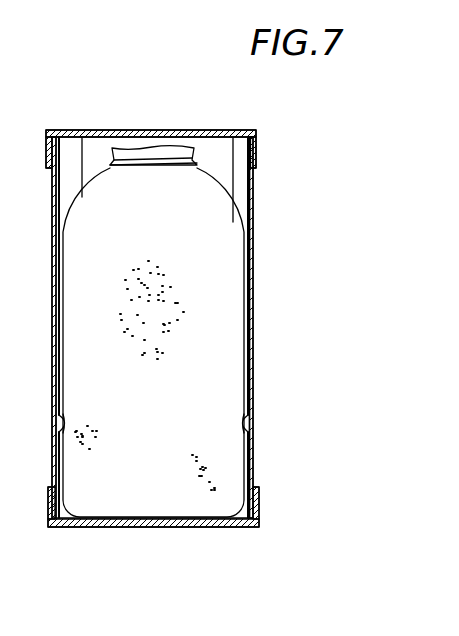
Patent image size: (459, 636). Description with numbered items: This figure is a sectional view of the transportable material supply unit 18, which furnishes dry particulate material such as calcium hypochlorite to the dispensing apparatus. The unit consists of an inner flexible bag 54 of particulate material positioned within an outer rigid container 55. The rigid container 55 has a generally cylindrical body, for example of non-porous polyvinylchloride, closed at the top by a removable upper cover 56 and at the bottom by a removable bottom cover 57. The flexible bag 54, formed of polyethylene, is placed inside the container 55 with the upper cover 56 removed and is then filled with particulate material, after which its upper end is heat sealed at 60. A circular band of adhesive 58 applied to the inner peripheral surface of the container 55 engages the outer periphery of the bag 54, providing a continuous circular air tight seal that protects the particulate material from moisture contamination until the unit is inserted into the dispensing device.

The material supply unit 18 is at (253, 230).
The flexible bag 54 is at (213, 305).
The rigid container 55 is at (248, 357).
The upper cover 56 is at (207, 130).
The bottom cover 57 is at (192, 528).
The circular band of adhesive 58 is at (250, 424).
The heat seal 60 is at (148, 162).